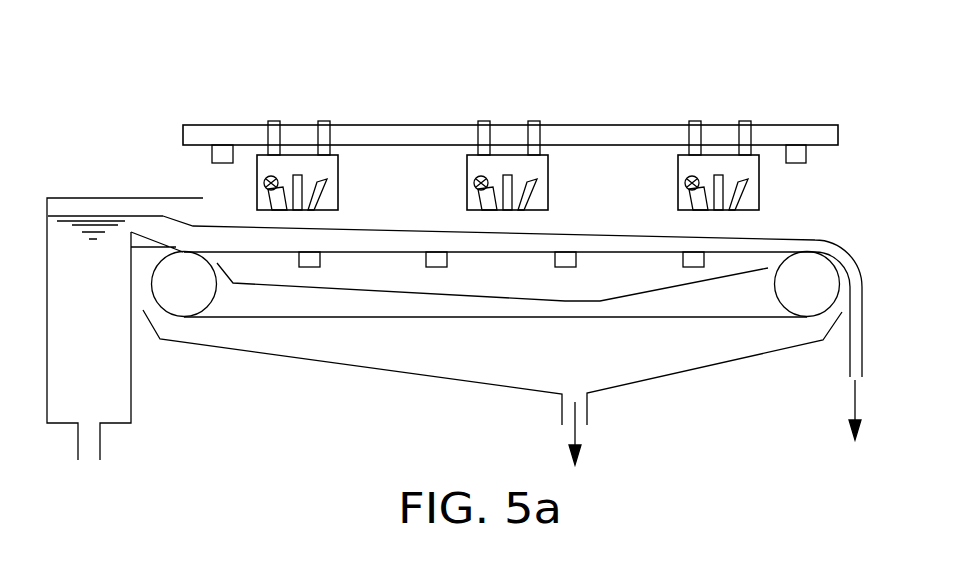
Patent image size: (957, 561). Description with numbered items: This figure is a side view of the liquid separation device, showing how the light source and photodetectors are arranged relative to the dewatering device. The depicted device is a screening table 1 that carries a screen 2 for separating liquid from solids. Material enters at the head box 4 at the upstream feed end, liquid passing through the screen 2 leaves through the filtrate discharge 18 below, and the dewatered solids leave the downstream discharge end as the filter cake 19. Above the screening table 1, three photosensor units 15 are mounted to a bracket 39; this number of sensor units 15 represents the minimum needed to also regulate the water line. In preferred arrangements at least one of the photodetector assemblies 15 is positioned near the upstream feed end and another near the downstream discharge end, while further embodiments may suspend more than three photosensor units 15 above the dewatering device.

The screening table 1 is at (293, 303).
The screen 2 is at (402, 318).
The head box 4 is at (60, 335).
The photosensors 15 is at (338, 183).
The filtrate discharge 18 is at (583, 413).
The filter cake 19 is at (857, 365).
The bracket 39 is at (815, 138).